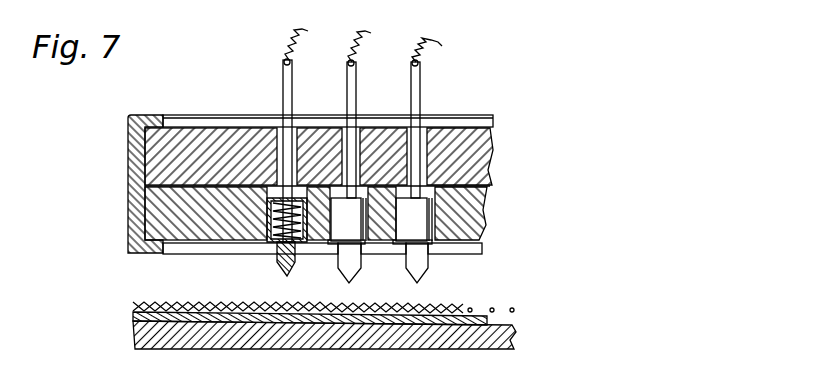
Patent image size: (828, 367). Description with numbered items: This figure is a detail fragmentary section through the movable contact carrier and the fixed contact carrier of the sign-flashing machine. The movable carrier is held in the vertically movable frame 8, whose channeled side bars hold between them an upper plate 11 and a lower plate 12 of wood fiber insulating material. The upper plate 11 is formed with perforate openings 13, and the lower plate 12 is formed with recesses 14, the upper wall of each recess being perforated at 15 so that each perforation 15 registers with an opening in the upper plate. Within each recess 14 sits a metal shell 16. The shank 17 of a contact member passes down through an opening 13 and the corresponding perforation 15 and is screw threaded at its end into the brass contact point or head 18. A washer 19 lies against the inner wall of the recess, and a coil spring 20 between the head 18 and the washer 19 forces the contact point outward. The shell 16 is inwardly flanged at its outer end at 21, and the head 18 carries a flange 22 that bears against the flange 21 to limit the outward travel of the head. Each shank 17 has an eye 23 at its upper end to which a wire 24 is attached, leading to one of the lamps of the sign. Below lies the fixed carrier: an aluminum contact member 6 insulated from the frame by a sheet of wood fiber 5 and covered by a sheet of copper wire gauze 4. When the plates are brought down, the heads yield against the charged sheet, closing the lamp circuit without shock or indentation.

The sheet of wire gauze 4 is at (430, 312).
The sheet of wood fiber 5 is at (512, 343).
The contact member 6 is at (477, 313).
The frame 8 is at (138, 177).
The upper plate 11 is at (158, 158).
The lower plate 12 is at (163, 208).
The perforate openings 13 is at (443, 128).
The recesses 14 is at (440, 210).
The perforation 15 is at (507, 191).
The metal shell 16 is at (425, 222).
The shank 17 is at (416, 106).
The contact point or head 18 is at (280, 266).
The washer 19 is at (311, 122).
The coil spring 20 is at (267, 241).
The flange 21 is at (298, 254).
The flange 22 is at (270, 243).
The eye 23 is at (357, 65).
The wire 24 is at (360, 36).